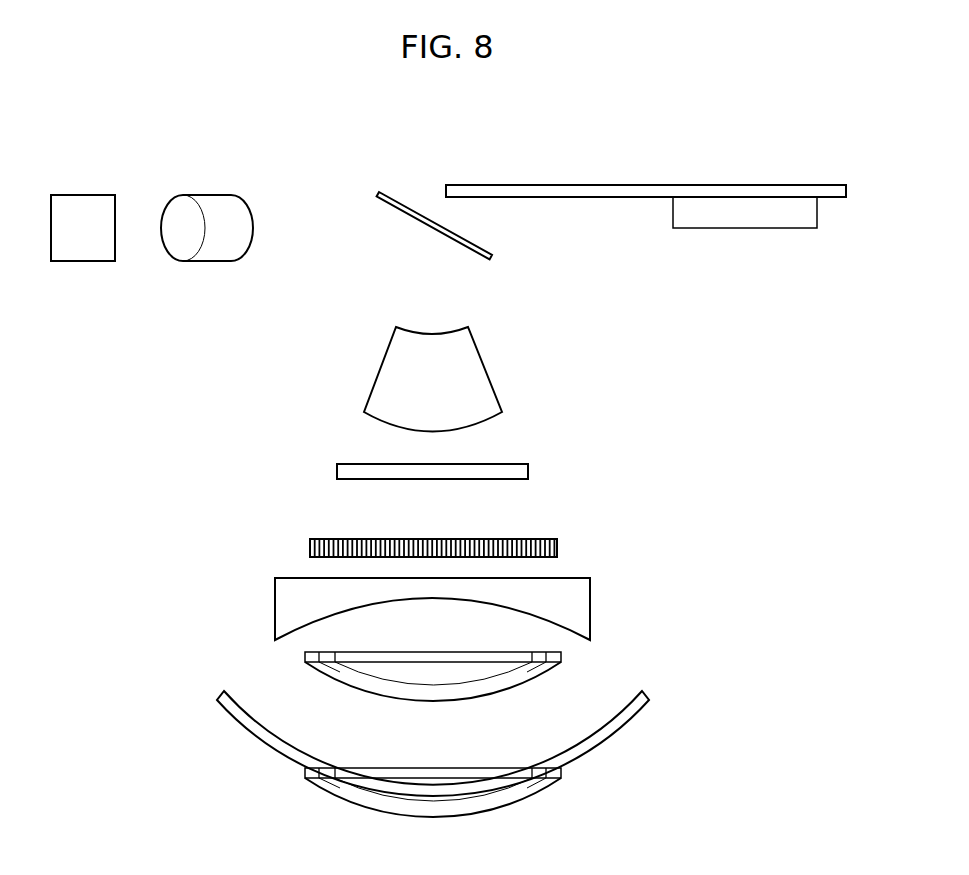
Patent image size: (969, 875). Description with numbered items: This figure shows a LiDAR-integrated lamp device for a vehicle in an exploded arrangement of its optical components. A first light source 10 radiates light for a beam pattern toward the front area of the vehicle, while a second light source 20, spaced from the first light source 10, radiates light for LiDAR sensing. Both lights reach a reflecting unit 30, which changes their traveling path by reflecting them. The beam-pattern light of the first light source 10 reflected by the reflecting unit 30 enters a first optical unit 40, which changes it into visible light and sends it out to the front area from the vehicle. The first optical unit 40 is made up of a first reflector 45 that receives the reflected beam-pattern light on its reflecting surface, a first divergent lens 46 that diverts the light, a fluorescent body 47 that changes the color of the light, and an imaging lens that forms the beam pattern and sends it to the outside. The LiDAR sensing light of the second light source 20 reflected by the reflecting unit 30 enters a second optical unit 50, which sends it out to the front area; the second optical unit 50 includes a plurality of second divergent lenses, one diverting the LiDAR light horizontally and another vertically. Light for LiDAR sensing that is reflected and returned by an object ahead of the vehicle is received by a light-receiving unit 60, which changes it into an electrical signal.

The first light source 10 is at (218, 205).
The second light source 20 is at (79, 205).
The reflecting unit 30 is at (387, 190).
The first optical unit 40 is at (235, 365).
The first reflector 45 is at (392, 371).
The first divergent lens 46 is at (345, 472).
The fluorescent body 47 is at (312, 549).
The second optical unit 50 is at (717, 603).
The light-receiving unit 60 is at (759, 192).